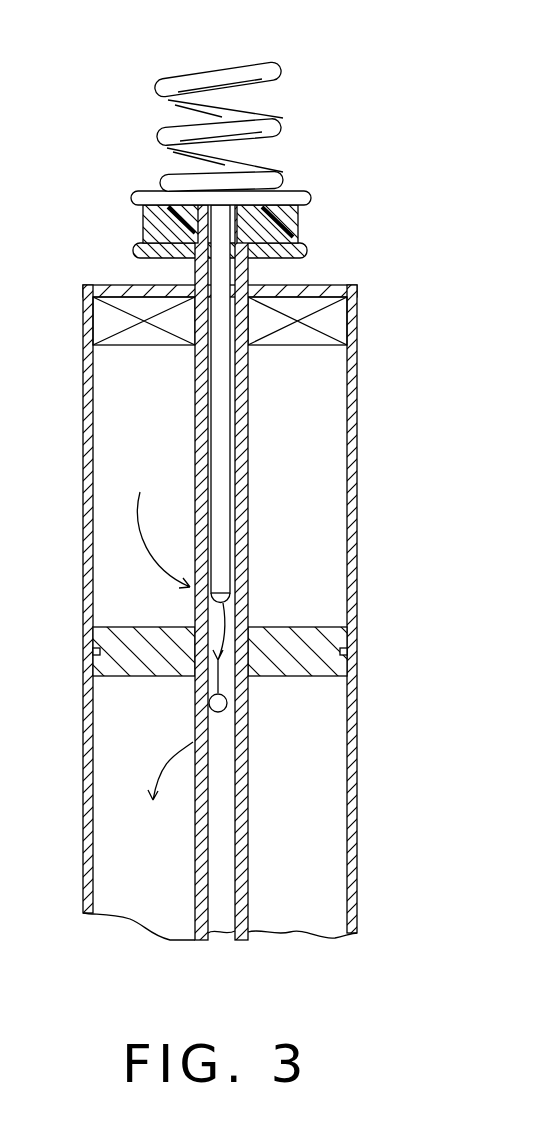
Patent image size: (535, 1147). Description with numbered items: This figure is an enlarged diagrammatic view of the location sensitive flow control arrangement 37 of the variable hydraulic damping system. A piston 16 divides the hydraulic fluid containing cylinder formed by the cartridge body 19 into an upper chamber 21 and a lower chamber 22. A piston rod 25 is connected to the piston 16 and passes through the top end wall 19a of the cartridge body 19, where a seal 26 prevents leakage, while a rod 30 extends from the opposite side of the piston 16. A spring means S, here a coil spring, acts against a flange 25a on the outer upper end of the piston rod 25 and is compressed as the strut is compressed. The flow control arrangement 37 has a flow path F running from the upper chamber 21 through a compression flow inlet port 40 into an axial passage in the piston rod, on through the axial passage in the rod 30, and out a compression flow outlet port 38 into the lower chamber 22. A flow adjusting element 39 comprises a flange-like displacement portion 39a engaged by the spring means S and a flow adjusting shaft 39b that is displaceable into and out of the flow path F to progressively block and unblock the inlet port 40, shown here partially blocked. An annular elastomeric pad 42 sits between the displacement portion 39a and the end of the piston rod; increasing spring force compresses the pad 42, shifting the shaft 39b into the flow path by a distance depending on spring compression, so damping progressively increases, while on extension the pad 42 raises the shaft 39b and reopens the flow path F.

The location sensitive flow control arrangement 37 is at (218, 309).
The spring means S is at (297, 130).
The flow adjusting element 39 is at (300, 173).
The displacement portion 39a is at (133, 197).
The flow adjusting shaft 39b is at (223, 410).
The annular elastomeric pad 42 is at (293, 220).
The flange 25a is at (128, 250).
The piston rod 25 is at (249, 389).
The cartridge body 19 is at (83, 320).
The top end wall 19a is at (338, 285).
The seal 26 is at (338, 327).
The upper chamber 21 is at (315, 471).
The flow path F is at (180, 634).
The compression flow inlet port 40 is at (230, 602).
The piston 16 is at (115, 660).
The compression flow outlet port 38 is at (227, 703).
The lower chamber 22 is at (315, 838).
The rod 30 is at (250, 890).